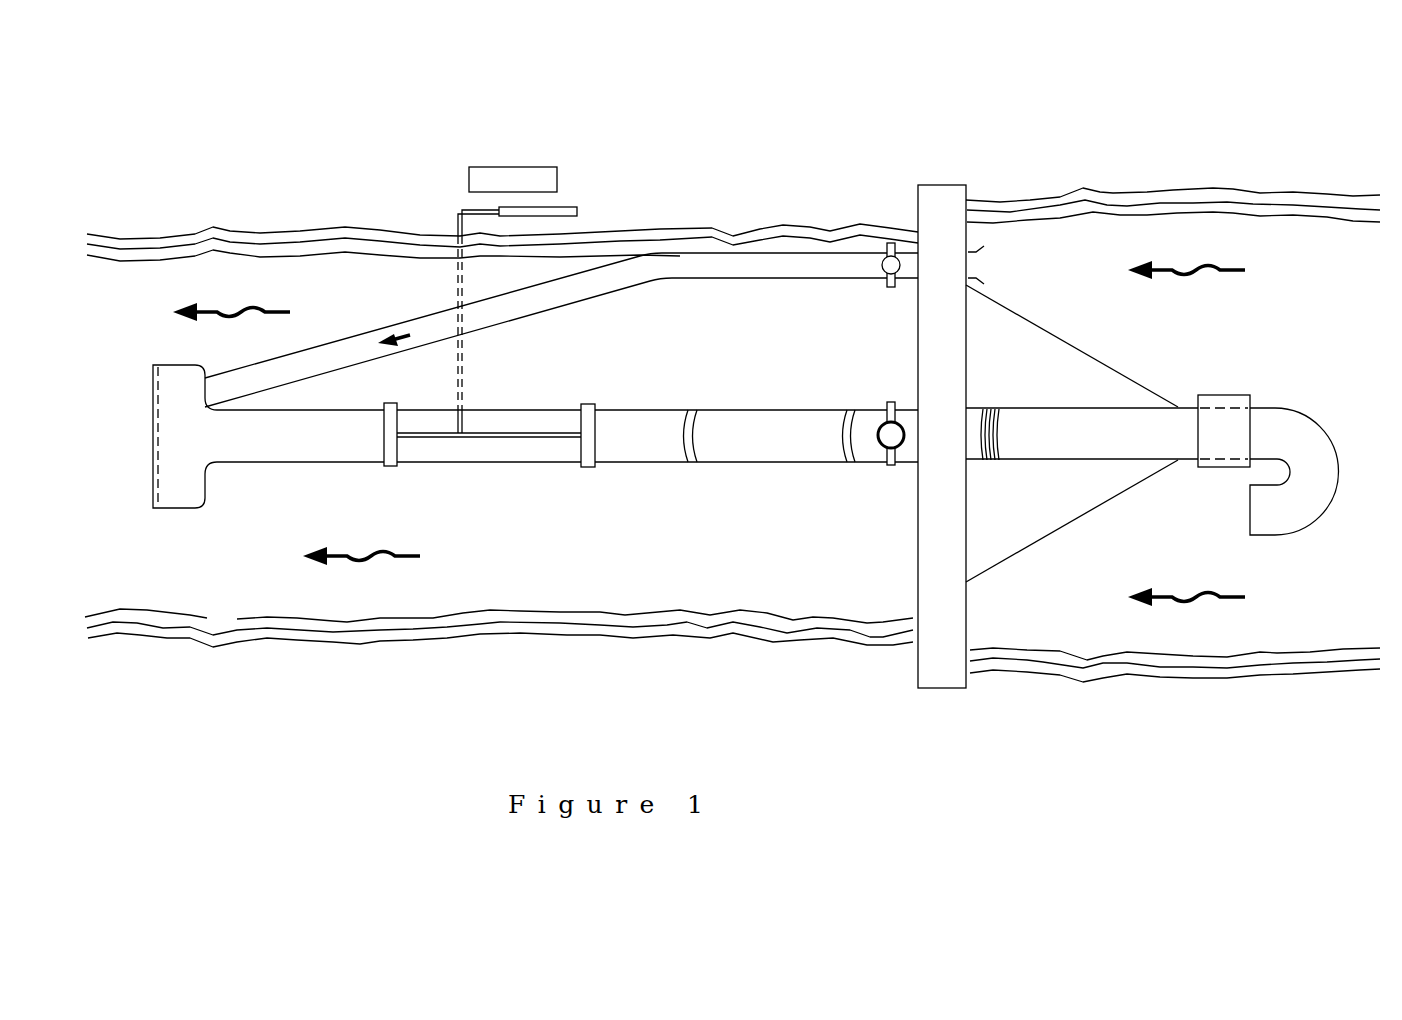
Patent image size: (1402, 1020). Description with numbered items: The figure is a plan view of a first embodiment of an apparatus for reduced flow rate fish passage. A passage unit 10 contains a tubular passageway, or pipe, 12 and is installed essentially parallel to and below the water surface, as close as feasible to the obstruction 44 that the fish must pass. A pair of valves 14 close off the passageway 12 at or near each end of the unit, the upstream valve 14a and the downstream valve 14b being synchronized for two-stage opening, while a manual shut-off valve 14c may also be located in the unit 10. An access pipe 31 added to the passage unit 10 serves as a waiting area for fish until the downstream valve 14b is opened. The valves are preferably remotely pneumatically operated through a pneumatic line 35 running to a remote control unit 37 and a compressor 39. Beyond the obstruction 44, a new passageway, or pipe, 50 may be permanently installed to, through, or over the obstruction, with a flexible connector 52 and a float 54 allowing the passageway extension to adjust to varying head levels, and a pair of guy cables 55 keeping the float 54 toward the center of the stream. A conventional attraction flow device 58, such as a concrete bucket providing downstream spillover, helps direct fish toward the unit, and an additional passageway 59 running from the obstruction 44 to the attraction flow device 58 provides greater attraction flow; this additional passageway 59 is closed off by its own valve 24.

The passage unit 10 is at (701, 458).
The passageway 12 is at (533, 418).
The valves 14 is at (462, 486).
The upstream valve 14a is at (585, 470).
The downstream valve 14b is at (391, 470).
The manual shut-off valve 14c is at (888, 467).
The valve 24 is at (887, 247).
The access pipe 31 is at (253, 449).
The pneumatic line 35 is at (455, 296).
The control unit 37 is at (487, 172).
The compressor 39 is at (568, 209).
The obstruction 44 is at (948, 503).
The passageway 50 is at (751, 447).
The flexible connector 52 is at (996, 406).
The float 54 is at (1222, 443).
The guy cables 55 is at (1062, 333).
The attraction flow device 58 is at (178, 388).
The additional passageway 59 is at (535, 300).